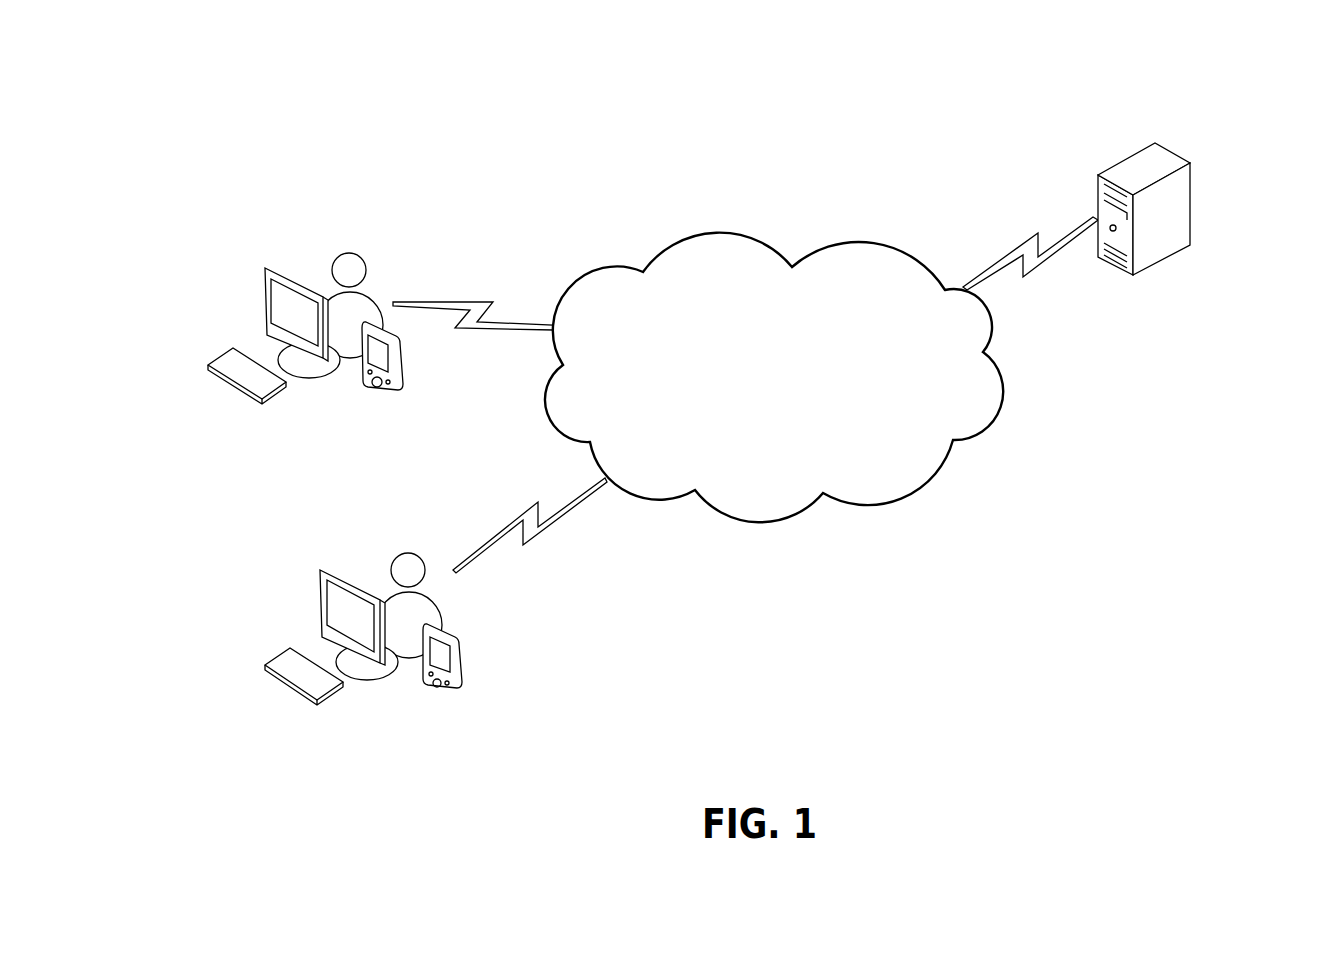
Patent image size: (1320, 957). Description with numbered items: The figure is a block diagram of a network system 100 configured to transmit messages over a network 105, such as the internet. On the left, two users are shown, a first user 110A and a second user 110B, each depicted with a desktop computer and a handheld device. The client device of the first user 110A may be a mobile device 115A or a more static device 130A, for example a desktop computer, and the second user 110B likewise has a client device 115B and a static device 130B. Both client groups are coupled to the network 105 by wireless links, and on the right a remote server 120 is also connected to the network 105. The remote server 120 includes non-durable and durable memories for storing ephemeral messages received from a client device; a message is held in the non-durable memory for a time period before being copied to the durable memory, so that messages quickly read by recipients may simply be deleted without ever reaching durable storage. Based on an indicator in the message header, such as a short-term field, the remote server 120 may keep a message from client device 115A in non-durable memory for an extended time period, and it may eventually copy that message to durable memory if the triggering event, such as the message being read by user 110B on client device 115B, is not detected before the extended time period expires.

The network system 100 is at (433, 102).
The network 105 is at (585, 282).
The user 110A is at (333, 255).
The user 110B is at (423, 595).
The mobile device 115A is at (388, 393).
The client device 115B is at (455, 692).
The remote server 120 is at (1185, 157).
The static device 130A is at (230, 340).
The static device 130B is at (302, 650).